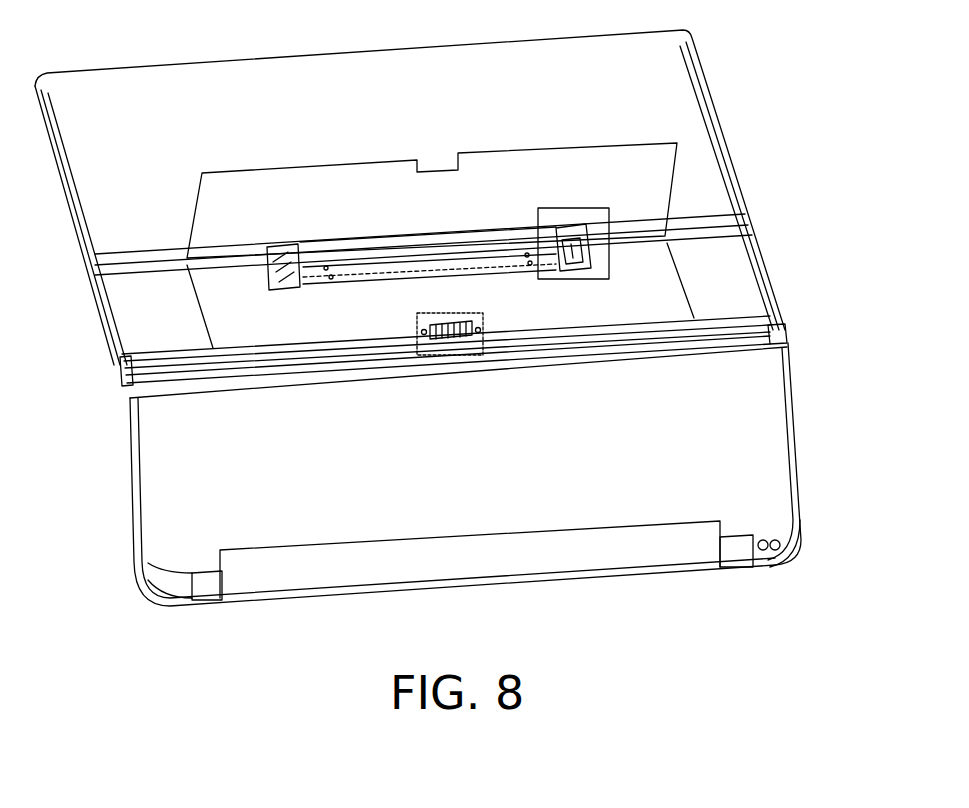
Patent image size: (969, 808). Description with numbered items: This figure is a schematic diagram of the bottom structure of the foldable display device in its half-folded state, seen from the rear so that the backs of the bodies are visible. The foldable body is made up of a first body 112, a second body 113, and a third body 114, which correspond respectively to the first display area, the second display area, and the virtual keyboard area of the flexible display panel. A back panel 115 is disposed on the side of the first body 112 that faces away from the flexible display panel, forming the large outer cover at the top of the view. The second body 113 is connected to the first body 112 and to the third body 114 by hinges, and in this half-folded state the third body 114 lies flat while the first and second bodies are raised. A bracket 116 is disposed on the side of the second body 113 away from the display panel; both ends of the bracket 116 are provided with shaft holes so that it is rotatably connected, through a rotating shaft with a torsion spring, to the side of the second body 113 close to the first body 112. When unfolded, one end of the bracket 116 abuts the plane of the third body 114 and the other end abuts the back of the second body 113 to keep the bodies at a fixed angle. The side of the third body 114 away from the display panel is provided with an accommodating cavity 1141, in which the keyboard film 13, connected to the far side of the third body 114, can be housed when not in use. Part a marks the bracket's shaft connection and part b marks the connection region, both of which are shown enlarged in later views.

The first body 112 is at (725, 138).
The back panel 115 is at (647, 88).
The bracket 116 is at (662, 190).
The second body 113 is at (747, 278).
The part a is at (609, 250).
The third body 114 is at (792, 393).
The accommodating cavity 1141 is at (778, 430).
The keyboard film 13 is at (683, 560).
The part b is at (455, 352).